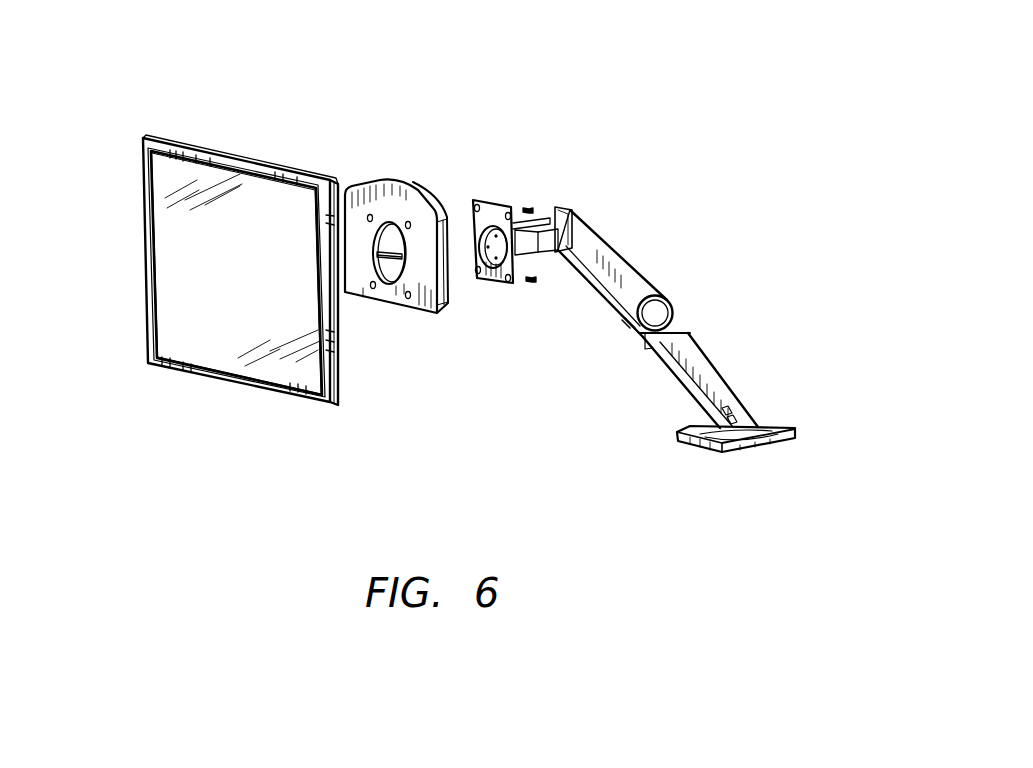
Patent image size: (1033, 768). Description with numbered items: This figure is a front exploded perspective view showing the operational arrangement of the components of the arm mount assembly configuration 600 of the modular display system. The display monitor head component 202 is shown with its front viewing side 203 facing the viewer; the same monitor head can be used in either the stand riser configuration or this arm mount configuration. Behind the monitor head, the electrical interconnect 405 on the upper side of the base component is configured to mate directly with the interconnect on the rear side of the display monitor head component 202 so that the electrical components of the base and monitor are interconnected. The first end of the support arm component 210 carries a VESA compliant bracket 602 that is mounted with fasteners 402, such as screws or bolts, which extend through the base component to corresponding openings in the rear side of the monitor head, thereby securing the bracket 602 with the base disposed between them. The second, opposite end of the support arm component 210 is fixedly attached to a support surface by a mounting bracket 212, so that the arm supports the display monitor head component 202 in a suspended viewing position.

The arm mount assembly configuration 600 is at (142, 53).
The display monitor head component 202 is at (247, 157).
The front viewing side 203 is at (227, 357).
The electrical interconnect 405 is at (392, 255).
The VESA compliant bracket 602 is at (477, 200).
The fasteners 402 is at (529, 209).
The support arm component 210 is at (632, 280).
The mounting bracket 212 is at (792, 427).